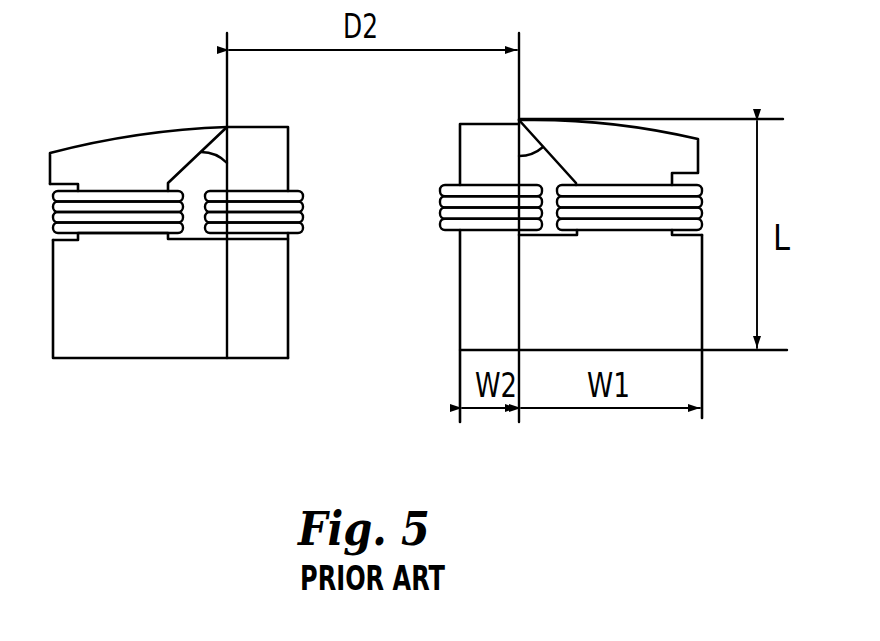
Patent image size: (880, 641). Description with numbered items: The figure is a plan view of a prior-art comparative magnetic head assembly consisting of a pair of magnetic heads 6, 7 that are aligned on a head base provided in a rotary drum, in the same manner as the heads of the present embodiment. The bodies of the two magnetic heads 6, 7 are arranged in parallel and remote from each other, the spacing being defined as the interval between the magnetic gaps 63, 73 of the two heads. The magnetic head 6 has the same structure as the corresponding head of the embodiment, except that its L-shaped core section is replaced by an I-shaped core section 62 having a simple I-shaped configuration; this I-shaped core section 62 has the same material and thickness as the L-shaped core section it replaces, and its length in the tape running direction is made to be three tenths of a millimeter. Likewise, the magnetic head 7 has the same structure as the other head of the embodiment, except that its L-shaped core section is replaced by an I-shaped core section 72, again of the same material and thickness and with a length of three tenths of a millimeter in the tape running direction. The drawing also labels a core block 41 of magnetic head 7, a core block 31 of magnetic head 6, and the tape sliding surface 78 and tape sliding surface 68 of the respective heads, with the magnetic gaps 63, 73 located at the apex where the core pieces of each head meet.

The magnetic head 7 is at (127, 34).
The magnetic head 6 is at (645, 29).
The tape sliding surface of second head 78 is at (85, 143).
The magnetic gap 73 is at (227, 127).
The I-shaped core section 72 is at (260, 336).
The core block of second head 41 is at (125, 338).
The tape sliding surface of first head 68 is at (663, 130).
The magnetic gap 63 is at (519, 120).
The I-shaped core section 62 is at (485, 307).
The core block of first head 31 is at (675, 312).